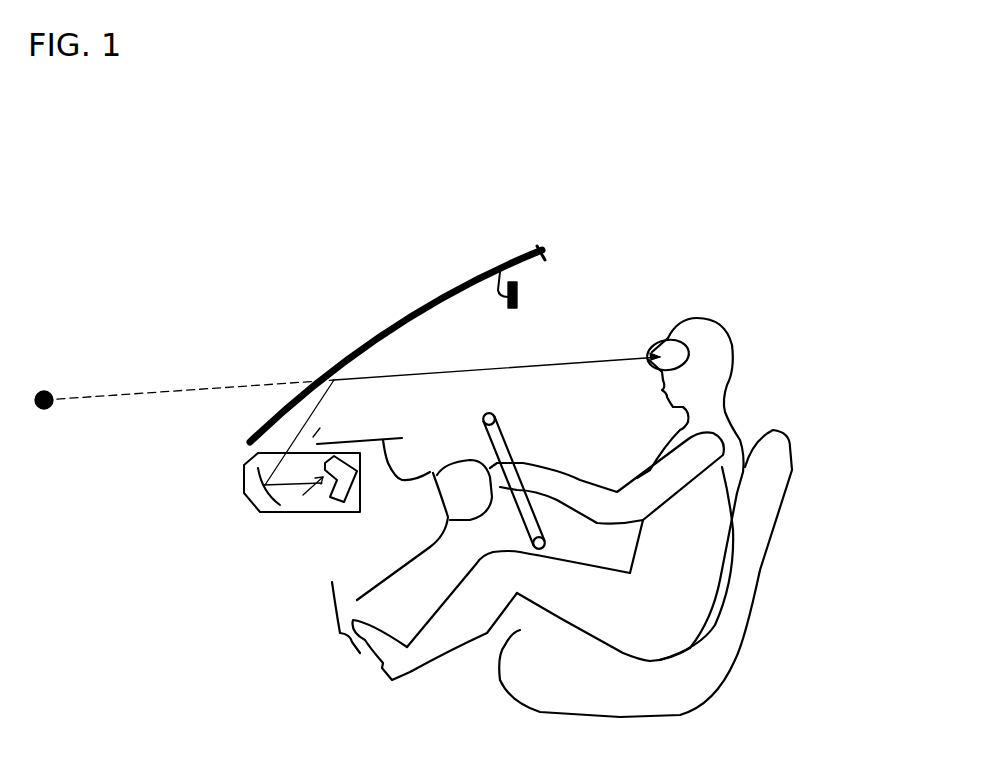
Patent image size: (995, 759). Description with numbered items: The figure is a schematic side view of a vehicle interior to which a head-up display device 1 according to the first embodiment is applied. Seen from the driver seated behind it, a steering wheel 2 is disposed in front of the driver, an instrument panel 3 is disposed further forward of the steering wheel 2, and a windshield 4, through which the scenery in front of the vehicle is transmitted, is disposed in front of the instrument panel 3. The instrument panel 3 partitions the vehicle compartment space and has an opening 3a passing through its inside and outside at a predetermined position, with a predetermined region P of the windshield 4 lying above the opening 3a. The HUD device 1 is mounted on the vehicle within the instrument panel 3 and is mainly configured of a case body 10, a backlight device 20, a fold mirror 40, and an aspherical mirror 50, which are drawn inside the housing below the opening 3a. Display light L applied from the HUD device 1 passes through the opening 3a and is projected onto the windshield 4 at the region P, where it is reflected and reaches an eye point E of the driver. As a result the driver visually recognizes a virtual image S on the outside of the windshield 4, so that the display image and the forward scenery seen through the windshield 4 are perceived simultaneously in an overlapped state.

The head-up display device 1 is at (241, 531).
The steering wheel 2 is at (508, 446).
The instrument panel 3 is at (396, 438).
The opening 3a is at (313, 436).
The windshield 4 is at (505, 262).
The case body 10 is at (273, 513).
The backlight device 20 is at (360, 506).
The fold mirror 40 is at (310, 494).
The aspherical mirror 50 is at (255, 482).
The virtual image S is at (45, 390).
The predetermined region P is at (336, 376).
The display light L is at (543, 360).
The eye point E is at (661, 342).